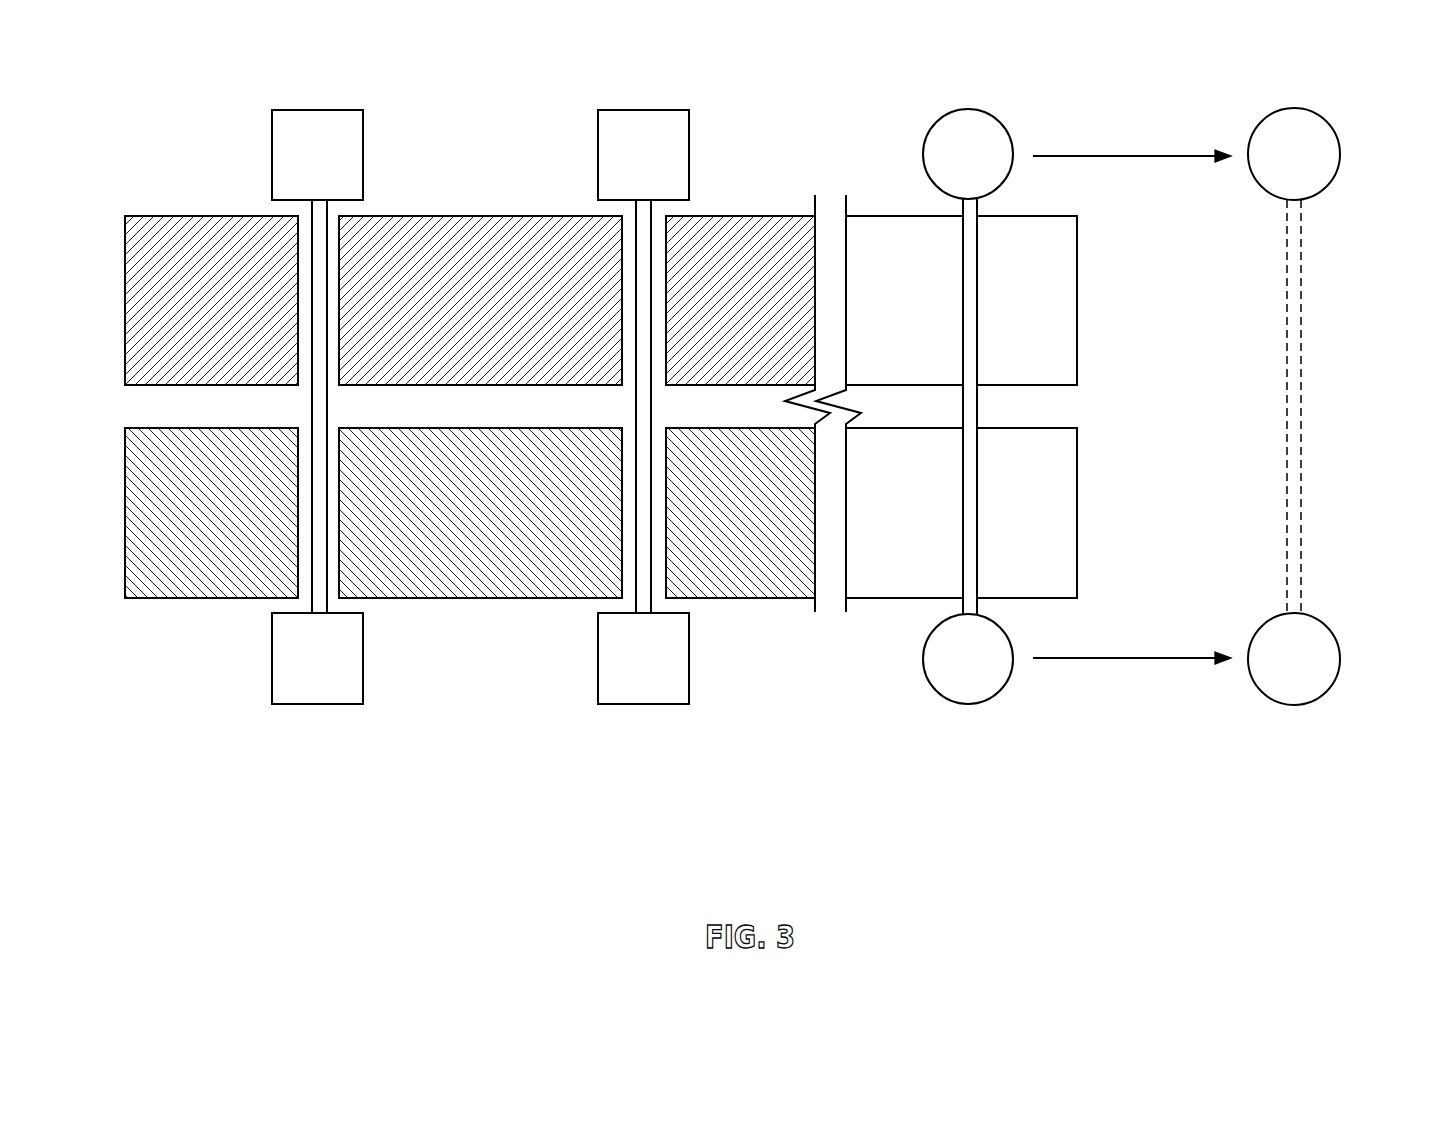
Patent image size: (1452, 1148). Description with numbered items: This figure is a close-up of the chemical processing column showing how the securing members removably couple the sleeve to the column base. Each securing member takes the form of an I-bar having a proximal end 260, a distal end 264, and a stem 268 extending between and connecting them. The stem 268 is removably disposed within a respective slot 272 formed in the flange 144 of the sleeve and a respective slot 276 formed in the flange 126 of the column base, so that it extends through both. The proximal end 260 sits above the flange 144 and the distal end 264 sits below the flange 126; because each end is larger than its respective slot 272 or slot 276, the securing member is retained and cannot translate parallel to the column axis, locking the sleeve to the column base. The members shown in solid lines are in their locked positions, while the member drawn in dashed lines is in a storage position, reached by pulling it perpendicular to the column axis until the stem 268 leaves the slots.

The flange of the sleeve 144 is at (472, 216).
The flange of the column base 126 is at (494, 598).
The proximal end 260 is at (320, 133).
The distal end 264 is at (302, 683).
The stem 268 is at (312, 420).
The slot 272 is at (297, 300).
The slot 276 is at (297, 514).